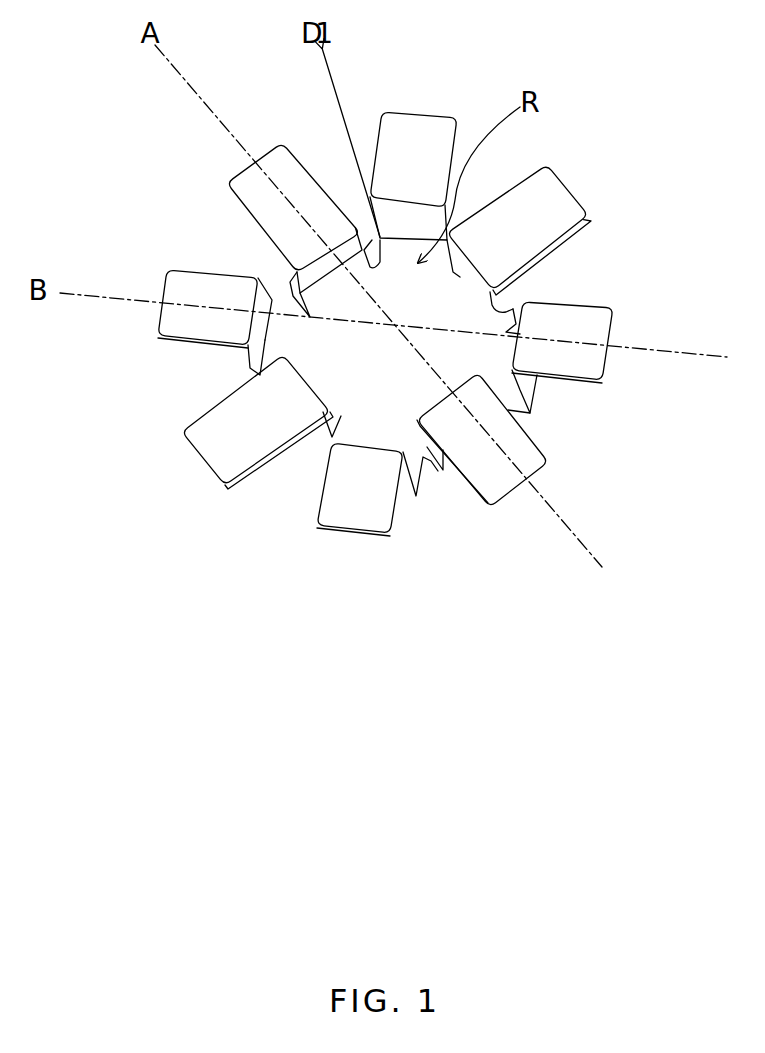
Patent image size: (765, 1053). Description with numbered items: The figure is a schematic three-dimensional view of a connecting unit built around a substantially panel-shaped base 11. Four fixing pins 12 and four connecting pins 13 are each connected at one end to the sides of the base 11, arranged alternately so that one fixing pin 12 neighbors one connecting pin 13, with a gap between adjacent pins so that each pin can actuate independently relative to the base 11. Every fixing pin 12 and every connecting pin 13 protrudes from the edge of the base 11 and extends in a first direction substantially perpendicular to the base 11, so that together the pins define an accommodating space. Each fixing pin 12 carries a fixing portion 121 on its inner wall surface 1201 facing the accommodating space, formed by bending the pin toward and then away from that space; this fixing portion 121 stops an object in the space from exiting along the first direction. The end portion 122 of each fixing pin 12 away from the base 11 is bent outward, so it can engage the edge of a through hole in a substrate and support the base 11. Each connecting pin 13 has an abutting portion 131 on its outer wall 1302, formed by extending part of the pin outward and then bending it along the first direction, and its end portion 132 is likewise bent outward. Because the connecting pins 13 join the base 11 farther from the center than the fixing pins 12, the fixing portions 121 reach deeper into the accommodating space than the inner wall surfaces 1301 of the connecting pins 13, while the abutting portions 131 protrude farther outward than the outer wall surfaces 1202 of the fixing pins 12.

The base 11 is at (422, 470).
The fixing pin 12 is at (557, 162).
The connecting pin 13 is at (383, 105).
The fixing portion 121 is at (327, 435).
The end portion 122 is at (277, 157).
The abutting portion 131 is at (457, 230).
The end portion 132 is at (400, 127).
The inner wall surface 1201 is at (517, 310).
The outer wall surface 1202 is at (517, 297).
The inner wall surface 1301 is at (268, 290).
The outer wall 1302 is at (248, 372).